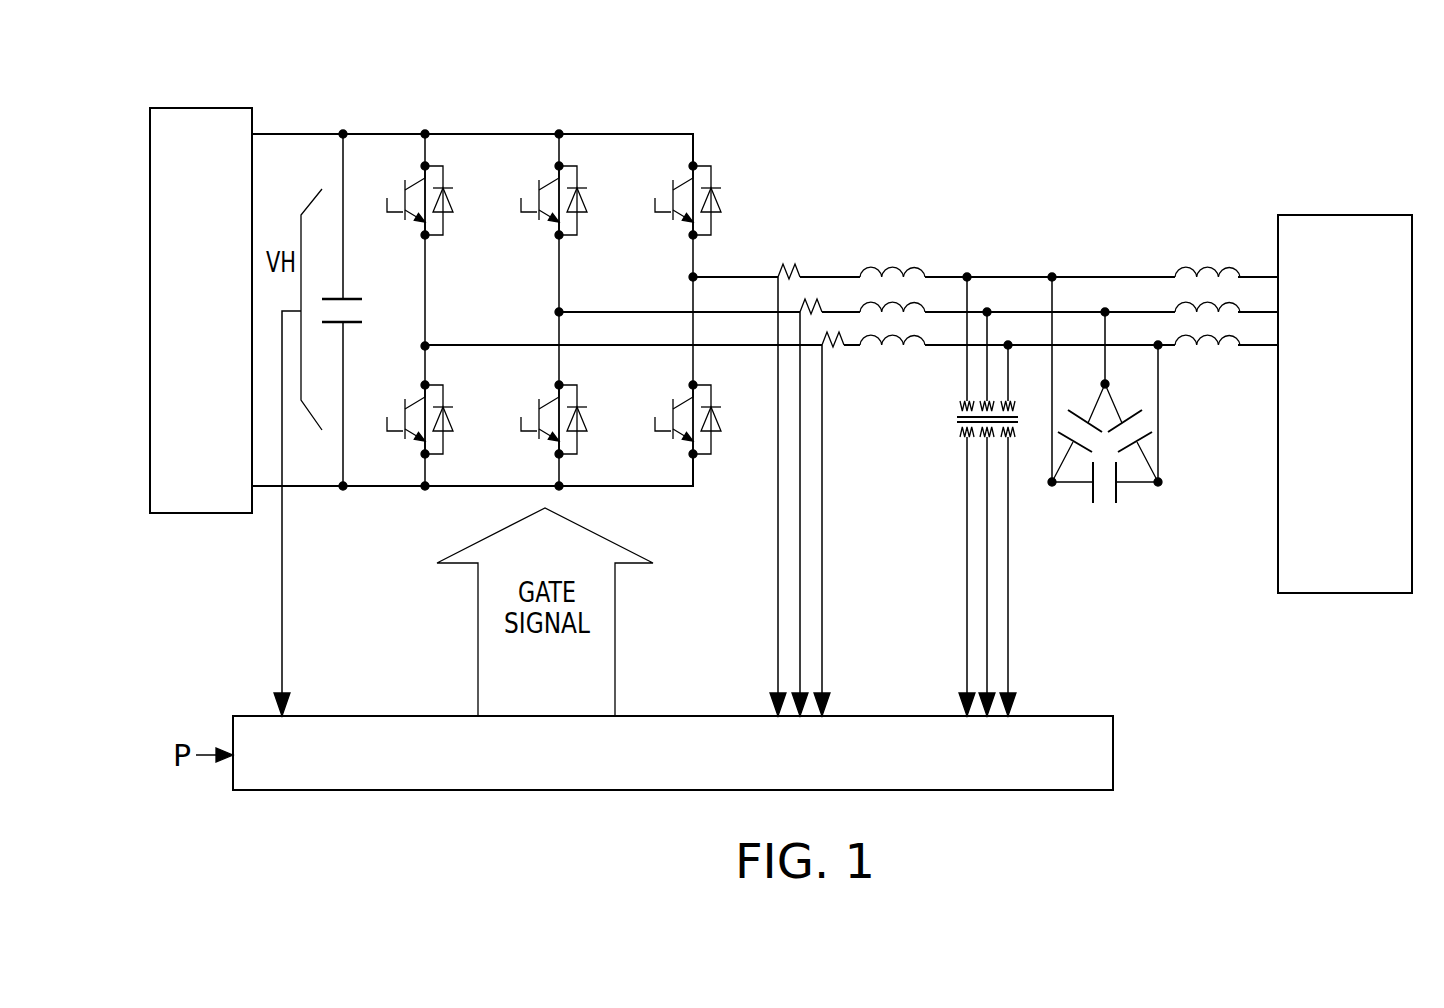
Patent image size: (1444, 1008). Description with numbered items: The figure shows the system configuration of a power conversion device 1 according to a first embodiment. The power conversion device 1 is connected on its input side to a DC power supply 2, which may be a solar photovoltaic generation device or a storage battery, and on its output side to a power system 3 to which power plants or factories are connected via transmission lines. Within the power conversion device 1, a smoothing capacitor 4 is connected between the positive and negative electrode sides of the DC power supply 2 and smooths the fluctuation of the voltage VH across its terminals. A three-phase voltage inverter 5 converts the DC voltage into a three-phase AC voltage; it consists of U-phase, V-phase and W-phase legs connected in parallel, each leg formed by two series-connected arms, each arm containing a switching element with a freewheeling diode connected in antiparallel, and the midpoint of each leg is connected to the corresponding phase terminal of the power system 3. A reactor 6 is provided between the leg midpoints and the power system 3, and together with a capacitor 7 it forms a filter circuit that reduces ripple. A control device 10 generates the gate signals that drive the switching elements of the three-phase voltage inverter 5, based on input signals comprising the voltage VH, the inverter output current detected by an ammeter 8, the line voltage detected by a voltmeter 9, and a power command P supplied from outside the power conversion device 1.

The power conversion device 1 is at (1022, 152).
The DC power supply 2 is at (213, 108).
The power system 3 is at (1345, 215).
The smoothing capacitor 4 is at (351, 297).
The three-phase voltage inverter 5 is at (626, 116).
The reactor 6 is at (898, 248).
The capacitor 7 is at (1109, 525).
The ammeter 8 is at (837, 370).
The voltmeter 9 is at (952, 425).
The control device 10 is at (1113, 752).